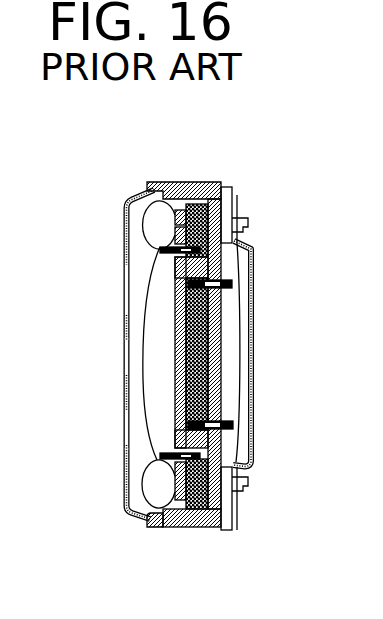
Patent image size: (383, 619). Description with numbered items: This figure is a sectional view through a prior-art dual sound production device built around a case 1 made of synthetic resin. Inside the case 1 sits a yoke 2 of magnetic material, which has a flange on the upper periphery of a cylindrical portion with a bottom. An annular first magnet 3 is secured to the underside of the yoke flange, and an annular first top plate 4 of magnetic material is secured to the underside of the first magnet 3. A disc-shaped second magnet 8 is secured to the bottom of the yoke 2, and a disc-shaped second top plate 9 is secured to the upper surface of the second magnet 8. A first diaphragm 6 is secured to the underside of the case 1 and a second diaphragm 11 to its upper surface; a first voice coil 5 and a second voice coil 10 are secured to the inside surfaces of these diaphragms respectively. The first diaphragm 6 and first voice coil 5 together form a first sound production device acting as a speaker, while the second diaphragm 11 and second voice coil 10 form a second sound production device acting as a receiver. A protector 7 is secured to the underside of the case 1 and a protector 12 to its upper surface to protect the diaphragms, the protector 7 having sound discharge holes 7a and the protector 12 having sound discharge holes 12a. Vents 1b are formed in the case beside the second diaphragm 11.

The case 1 is at (152, 182).
The vents 1b is at (228, 203).
The yoke 2 is at (203, 181).
The first magnet 3 is at (176, 223).
The first top plate 4 is at (175, 236).
The first voice coil 5 is at (162, 253).
The first diaphragm 6 is at (146, 311).
The protector 7 is at (128, 487).
The sound discharge holes 7a is at (123, 430).
The second magnet 8 is at (176, 342).
The second top plate 9 is at (205, 378).
The second voice coil 10 is at (163, 528).
The second diaphragm 11 is at (212, 528).
The protector 12 is at (251, 240).
The sound discharge holes 12a is at (250, 400).